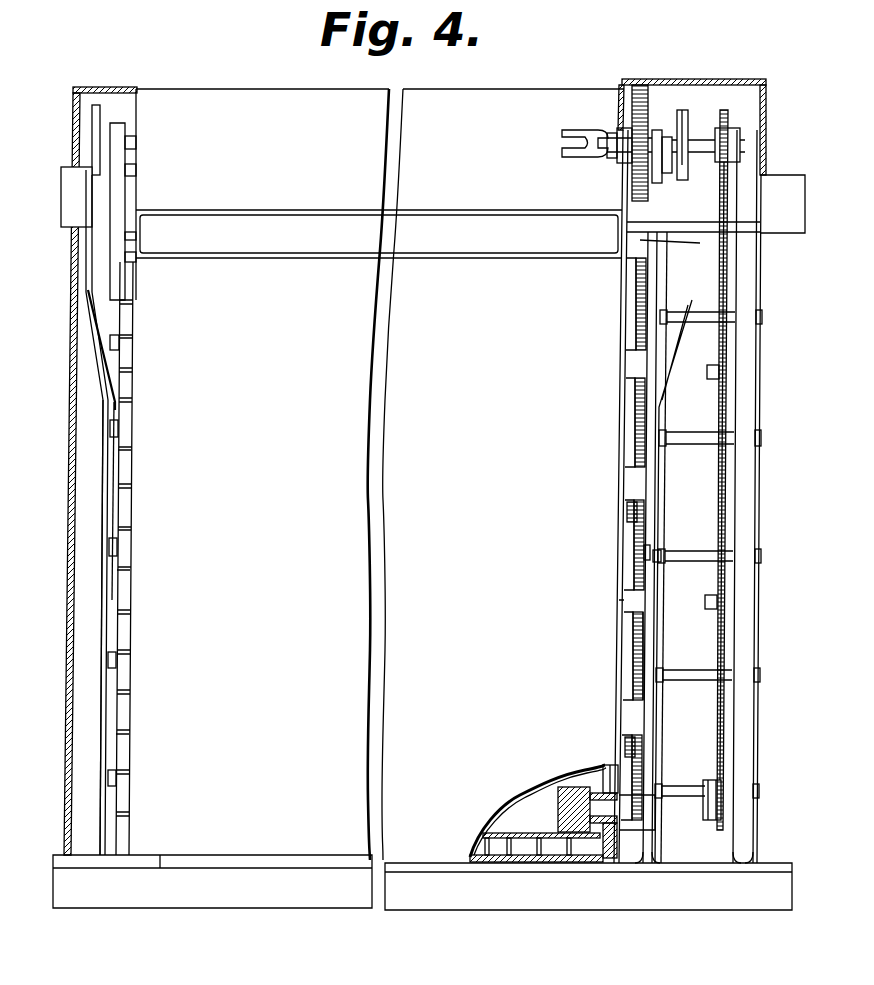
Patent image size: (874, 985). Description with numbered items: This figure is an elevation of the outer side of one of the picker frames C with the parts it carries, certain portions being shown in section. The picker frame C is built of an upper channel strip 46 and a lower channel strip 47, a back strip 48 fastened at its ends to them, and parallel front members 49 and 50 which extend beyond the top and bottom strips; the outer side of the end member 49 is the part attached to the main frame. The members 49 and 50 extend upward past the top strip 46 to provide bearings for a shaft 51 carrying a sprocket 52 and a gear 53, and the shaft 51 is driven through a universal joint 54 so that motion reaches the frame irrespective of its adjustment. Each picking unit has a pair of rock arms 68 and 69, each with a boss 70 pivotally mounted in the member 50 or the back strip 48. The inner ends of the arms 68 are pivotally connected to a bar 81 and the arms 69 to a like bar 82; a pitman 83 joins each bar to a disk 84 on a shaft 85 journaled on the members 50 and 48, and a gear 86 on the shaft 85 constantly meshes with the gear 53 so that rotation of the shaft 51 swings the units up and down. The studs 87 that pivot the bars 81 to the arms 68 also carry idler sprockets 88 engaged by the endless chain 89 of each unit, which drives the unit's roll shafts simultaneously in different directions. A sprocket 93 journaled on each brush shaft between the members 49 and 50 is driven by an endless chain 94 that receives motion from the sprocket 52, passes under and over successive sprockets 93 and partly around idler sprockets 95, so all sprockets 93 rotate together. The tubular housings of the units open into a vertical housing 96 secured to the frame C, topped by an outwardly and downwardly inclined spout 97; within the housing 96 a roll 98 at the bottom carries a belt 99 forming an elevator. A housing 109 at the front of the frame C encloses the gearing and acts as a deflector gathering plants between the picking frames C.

The upper channel strip 46 is at (783, 185).
The lower channel strip 47 is at (655, 897).
The back strip 48 is at (108, 714).
The front member 49 is at (750, 642).
The front member 50 is at (658, 625).
The shaft 51 is at (700, 135).
The sprocket 52 is at (730, 112).
The gear 53 is at (625, 128).
The universal joint 54 is at (580, 150).
The rock arm 68 is at (625, 432).
The rock arm 69 is at (125, 415).
The boss 70 is at (680, 552).
The bar 81 is at (662, 492).
The bar 82 is at (122, 472).
The pitman 83 is at (95, 258).
The disk 84 is at (92, 113).
The shaft 85 is at (134, 140).
The gear 86 is at (636, 88).
The stud 87 is at (660, 558).
The idler sprocket 88 is at (644, 556).
The endless chain 89 is at (628, 512).
The sprocket 93 is at (720, 800).
The endless chain 94 is at (733, 390).
The idler sprocket 95 is at (733, 372).
The vertical housing 96 is at (380, 474).
The spout 97 is at (505, 250).
The roll 98 is at (530, 808).
The belt 99 is at (505, 830).
The housing 109 is at (766, 120).
The picker frame C is at (265, 906).